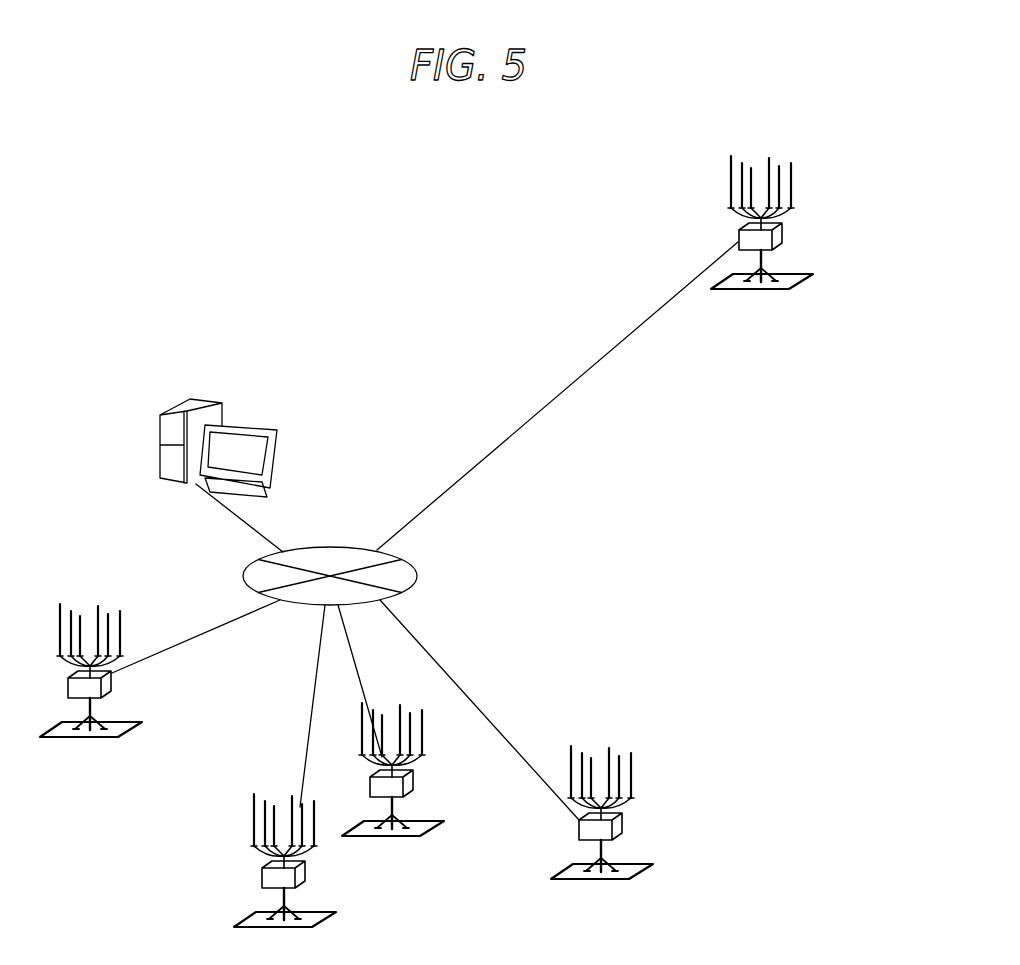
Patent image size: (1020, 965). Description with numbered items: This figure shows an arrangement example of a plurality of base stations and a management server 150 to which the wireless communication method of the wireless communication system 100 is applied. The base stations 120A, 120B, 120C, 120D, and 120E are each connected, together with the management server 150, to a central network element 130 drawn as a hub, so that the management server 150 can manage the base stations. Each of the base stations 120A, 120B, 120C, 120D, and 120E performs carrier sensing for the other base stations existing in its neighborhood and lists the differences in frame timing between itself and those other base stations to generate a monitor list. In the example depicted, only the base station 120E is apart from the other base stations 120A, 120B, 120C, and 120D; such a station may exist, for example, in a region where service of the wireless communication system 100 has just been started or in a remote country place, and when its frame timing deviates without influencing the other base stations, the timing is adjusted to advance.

The wireless communication system 100 is at (417, 410).
The network hub 130 is at (245, 575).
The management server 150 is at (222, 396).
The base station 120A is at (112, 686).
The base station 120B is at (307, 877).
The base station 120C is at (413, 786).
The base station 120D is at (622, 835).
The base station 120E is at (782, 250).